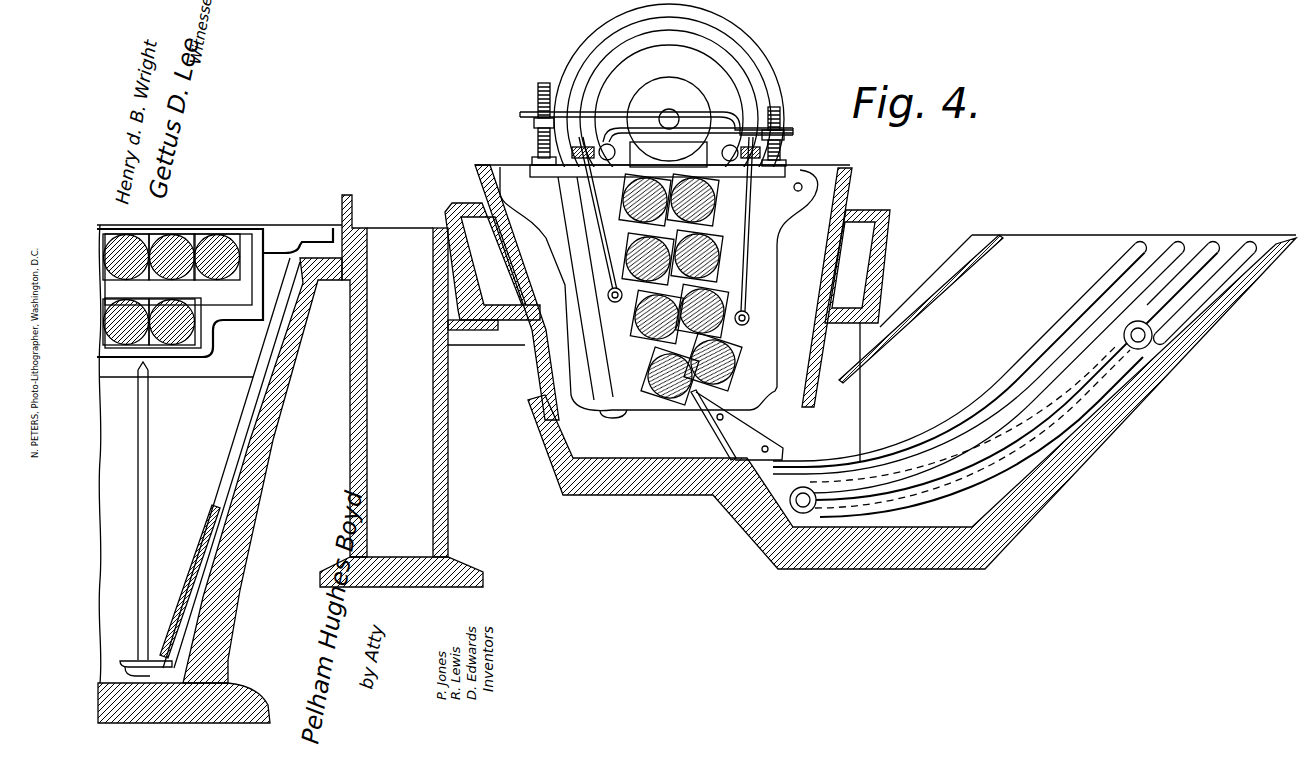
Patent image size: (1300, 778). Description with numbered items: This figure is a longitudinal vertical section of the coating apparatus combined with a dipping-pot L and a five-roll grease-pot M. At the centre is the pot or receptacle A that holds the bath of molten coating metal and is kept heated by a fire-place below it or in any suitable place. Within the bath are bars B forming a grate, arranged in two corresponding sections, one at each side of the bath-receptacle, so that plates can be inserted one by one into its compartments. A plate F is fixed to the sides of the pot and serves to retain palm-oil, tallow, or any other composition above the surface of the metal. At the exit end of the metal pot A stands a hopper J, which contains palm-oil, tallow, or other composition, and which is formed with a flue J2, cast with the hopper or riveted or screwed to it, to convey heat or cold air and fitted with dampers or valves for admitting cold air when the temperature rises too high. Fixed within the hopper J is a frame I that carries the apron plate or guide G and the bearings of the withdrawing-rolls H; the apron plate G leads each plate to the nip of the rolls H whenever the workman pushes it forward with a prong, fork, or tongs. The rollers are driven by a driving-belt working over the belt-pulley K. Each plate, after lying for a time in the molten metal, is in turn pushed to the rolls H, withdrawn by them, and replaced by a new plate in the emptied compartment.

The pot or receptacle A is at (912, 402).
The bars forming a grate B is at (1014, 379).
The plate F is at (921, 309).
The apron plate or guide G is at (737, 425).
The withdrawing-rolls H is at (680, 289).
The frame I is at (659, 280).
The hopper J is at (663, 292).
The flue J2 is at (667, 274).
The belt-pulley K is at (669, 119).
The dipping-pot L is at (401, 391).
The grease-pot M is at (126, 511).